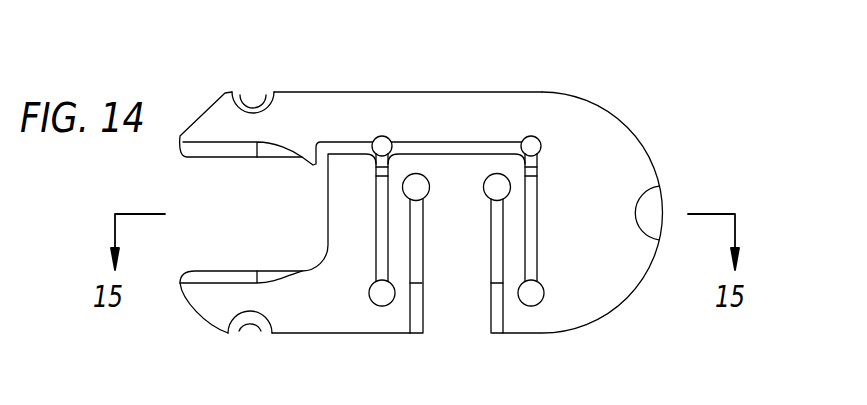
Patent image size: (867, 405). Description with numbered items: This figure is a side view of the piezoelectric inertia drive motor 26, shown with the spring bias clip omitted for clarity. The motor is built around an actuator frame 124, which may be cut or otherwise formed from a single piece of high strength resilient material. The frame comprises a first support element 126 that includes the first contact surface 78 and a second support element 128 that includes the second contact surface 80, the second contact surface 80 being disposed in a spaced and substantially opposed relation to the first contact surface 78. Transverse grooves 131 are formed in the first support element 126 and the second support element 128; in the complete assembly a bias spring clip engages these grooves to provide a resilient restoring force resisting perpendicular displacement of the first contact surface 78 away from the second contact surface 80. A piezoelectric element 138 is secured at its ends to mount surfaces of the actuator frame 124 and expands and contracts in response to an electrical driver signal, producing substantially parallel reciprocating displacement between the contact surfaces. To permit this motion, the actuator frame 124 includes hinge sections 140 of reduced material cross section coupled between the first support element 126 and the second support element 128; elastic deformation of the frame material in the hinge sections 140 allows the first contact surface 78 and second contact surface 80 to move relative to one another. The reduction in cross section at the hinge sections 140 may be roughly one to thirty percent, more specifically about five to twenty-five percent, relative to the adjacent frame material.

The piezoelectric inertia drive motor 26 is at (648, 118).
The first contact surface 78 is at (220, 152).
The second contact surface 80 is at (220, 270).
The actuator frame 124 is at (600, 287).
The first support element 126 is at (300, 117).
The second support element 128 is at (259, 300).
The transverse grooves 131 is at (250, 104).
The piezoelectric element 138 is at (497, 229).
The hinge sections 140 is at (393, 188).